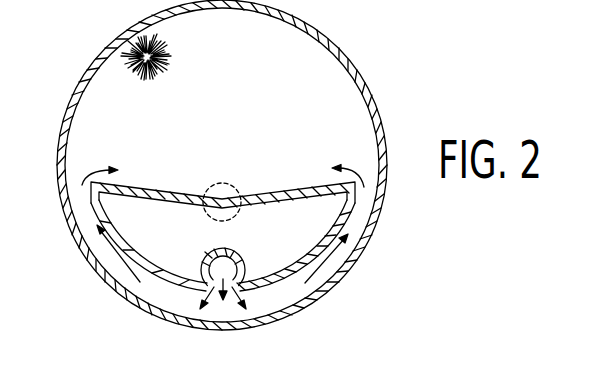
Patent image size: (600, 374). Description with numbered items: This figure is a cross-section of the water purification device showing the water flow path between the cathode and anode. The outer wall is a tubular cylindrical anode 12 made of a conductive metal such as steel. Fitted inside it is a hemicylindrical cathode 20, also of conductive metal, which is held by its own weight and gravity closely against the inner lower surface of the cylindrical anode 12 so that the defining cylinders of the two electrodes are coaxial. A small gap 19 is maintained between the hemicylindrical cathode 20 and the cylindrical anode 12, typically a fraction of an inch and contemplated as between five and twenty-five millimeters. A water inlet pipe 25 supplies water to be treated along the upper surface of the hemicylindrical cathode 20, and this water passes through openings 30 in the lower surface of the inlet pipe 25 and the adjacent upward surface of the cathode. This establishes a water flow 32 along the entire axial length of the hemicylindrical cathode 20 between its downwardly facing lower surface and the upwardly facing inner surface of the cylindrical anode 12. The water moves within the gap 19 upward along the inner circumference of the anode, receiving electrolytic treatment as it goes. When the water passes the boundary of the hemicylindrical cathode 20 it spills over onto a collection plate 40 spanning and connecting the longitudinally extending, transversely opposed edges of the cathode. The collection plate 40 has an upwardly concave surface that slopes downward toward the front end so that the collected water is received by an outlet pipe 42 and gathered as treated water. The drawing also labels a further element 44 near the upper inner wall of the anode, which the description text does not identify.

The cylindrical anode 12 is at (336, 48).
The gap 19 is at (275, 295).
The hemicylindrical cathode 20 is at (90, 265).
The water inlet pipe 25 is at (238, 255).
The openings 30 is at (222, 318).
The water flow 32 is at (343, 270).
The collection plate 40 is at (291, 189).
The outlet pipe 42 is at (209, 189).
The brush element 44 is at (119, 51).